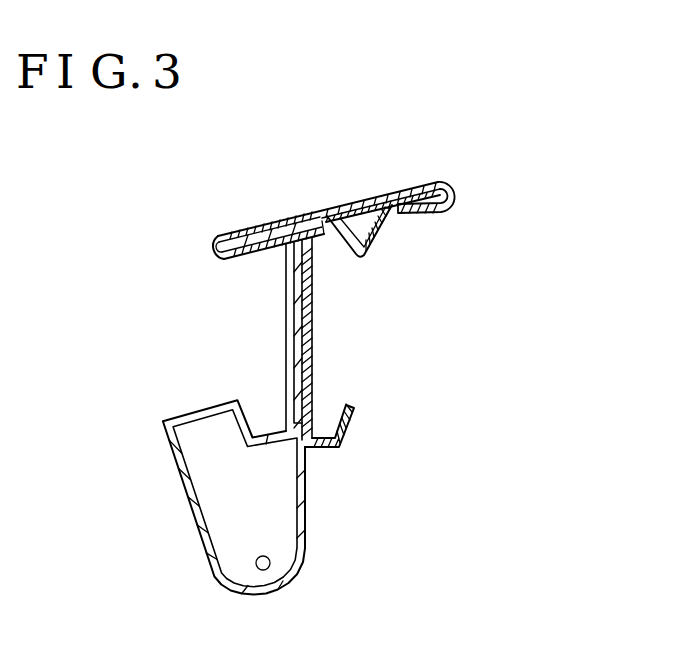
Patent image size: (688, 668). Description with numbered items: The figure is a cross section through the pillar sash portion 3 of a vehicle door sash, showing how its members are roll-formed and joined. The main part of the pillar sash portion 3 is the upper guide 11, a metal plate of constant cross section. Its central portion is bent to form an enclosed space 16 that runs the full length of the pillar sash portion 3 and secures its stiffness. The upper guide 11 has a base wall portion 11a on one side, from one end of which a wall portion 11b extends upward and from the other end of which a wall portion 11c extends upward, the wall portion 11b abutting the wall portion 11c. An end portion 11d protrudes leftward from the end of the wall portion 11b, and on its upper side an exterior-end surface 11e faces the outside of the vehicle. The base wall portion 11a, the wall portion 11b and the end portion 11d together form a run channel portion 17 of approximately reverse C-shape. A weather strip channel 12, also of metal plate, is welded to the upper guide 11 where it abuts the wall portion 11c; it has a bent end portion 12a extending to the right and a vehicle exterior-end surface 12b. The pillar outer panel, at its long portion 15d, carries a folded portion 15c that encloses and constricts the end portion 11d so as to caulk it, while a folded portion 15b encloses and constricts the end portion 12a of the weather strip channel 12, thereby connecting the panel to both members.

The pillar sash portion 3 is at (536, 278).
The upper guide 11 is at (191, 511).
The base wall portion 11a is at (170, 462).
The wall portion 11b is at (286, 350).
The wall portion 11c is at (312, 333).
The end portion 11d is at (252, 259).
The exterior-end surface 11e is at (262, 236).
The weather strip channel 12 is at (340, 448).
The end portion 12a is at (399, 217).
The vehicle exterior-end surface 12b is at (418, 184).
The folded portion 15b is at (453, 197).
The folded portion 15c is at (214, 241).
The long portion 15d is at (348, 203).
The enclosed space 16 is at (259, 571).
The run channel portion 17 is at (184, 321).